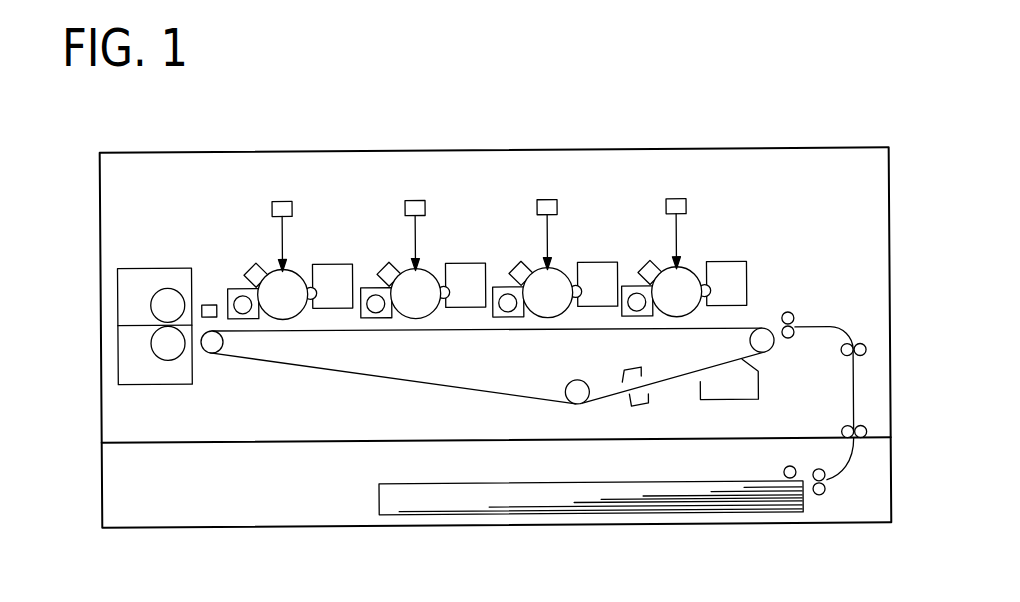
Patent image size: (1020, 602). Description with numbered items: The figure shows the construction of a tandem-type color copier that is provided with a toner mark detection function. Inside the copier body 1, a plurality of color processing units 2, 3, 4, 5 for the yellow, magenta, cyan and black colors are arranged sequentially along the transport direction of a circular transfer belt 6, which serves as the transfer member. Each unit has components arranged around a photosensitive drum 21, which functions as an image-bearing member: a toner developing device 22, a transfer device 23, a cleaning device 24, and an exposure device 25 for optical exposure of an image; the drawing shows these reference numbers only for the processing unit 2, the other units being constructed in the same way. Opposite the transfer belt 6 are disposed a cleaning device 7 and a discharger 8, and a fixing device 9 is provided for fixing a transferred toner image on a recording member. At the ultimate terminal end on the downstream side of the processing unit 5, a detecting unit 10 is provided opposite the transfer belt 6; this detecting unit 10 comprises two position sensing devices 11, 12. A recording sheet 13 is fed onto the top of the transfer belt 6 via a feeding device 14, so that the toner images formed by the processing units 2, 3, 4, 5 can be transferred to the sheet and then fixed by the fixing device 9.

The copier body 1 is at (890, 178).
The processing unit 2 is at (682, 262).
The processing unit 3 is at (536, 193).
The processing unit 4 is at (428, 193).
The processing unit 5 is at (271, 193).
The transfer belt 6 is at (346, 377).
The cleaning device 7 is at (760, 385).
The discharger 8 is at (650, 395).
The fixing device 9 is at (135, 266).
The detecting unit 10 is at (175, 205).
The position sensing device 11 is at (209, 291).
The position sensing device 12 is at (209, 311).
The recording sheet 13 is at (687, 515).
The feeding device 14 is at (840, 508).
The photosensitive drum 21 is at (688, 266).
The developing device 22 is at (745, 280).
The transfer device 23 is at (644, 275).
The cleaning device 24 is at (621, 318).
The exposure device 25 is at (688, 203).